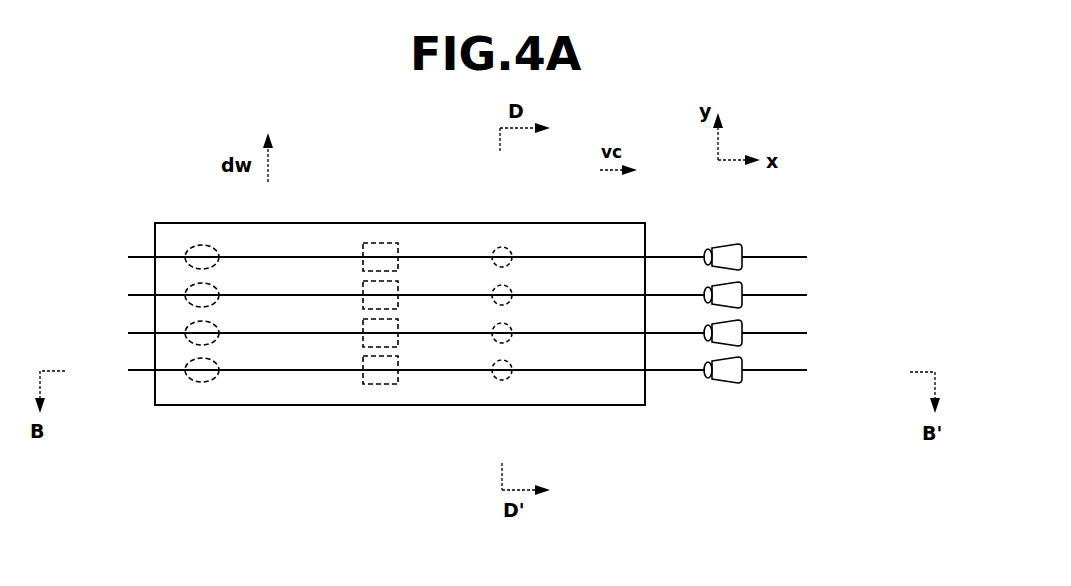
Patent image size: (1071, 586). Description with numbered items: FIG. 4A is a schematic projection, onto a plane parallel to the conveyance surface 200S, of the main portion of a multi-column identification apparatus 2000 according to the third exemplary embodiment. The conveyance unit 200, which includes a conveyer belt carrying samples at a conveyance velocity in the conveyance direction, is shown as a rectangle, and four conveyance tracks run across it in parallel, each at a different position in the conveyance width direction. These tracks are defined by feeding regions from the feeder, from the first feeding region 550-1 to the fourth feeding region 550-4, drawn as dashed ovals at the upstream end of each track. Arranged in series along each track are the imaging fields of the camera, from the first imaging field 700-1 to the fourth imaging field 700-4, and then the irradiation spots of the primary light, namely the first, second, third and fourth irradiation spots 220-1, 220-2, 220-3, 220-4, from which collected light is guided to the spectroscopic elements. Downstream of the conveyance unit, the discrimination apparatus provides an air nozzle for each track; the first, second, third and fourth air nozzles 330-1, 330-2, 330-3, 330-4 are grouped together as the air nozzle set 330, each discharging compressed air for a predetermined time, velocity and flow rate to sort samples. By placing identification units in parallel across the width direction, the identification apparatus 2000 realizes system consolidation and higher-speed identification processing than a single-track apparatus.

The identification apparatus 2000 is at (125, 142).
The conveyance unit 200 is at (618, 405).
The conveyance surface 200S is at (400, 237).
The feeding region 550-4 is at (197, 245).
The feeding region 550-1 is at (207, 382).
The imaging field 700-4 is at (380, 242).
The imaging field 700-1 is at (380, 385).
The irradiation spot 220-4 is at (497, 248).
The irradiation spot 220-3 is at (510, 290).
The irradiation spot 220-2 is at (512, 337).
The irradiation spot 220-1 is at (497, 381).
The air nozzle 330-4 is at (742, 264).
The air nozzle 330-3 is at (742, 303).
The air nozzle 330-2 is at (742, 340).
The air nozzle 330-1 is at (709, 406).
The air nozzle 330 is at (790, 370).